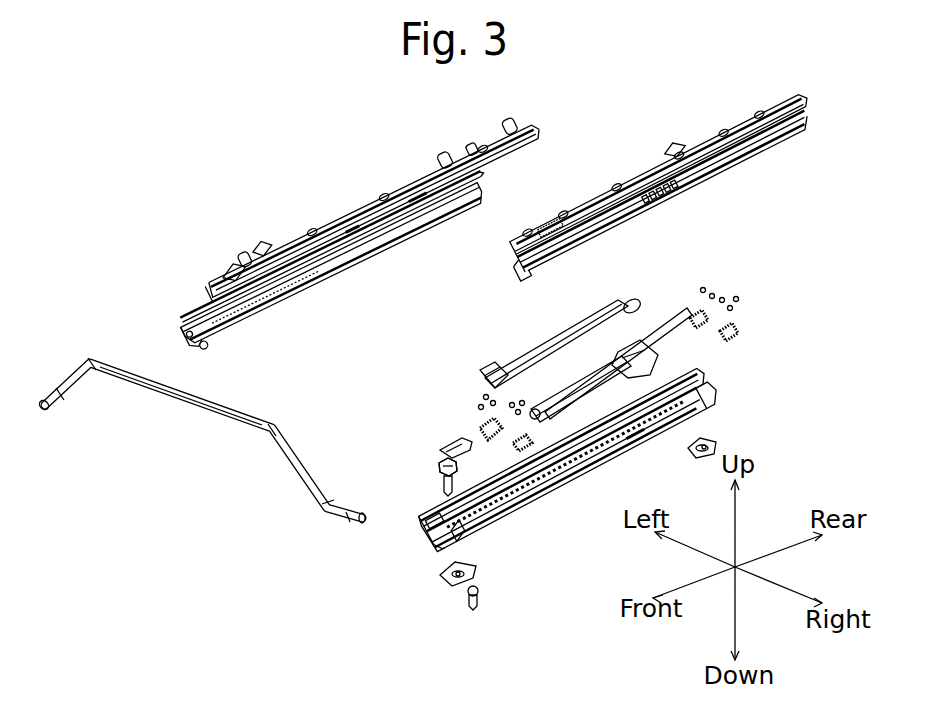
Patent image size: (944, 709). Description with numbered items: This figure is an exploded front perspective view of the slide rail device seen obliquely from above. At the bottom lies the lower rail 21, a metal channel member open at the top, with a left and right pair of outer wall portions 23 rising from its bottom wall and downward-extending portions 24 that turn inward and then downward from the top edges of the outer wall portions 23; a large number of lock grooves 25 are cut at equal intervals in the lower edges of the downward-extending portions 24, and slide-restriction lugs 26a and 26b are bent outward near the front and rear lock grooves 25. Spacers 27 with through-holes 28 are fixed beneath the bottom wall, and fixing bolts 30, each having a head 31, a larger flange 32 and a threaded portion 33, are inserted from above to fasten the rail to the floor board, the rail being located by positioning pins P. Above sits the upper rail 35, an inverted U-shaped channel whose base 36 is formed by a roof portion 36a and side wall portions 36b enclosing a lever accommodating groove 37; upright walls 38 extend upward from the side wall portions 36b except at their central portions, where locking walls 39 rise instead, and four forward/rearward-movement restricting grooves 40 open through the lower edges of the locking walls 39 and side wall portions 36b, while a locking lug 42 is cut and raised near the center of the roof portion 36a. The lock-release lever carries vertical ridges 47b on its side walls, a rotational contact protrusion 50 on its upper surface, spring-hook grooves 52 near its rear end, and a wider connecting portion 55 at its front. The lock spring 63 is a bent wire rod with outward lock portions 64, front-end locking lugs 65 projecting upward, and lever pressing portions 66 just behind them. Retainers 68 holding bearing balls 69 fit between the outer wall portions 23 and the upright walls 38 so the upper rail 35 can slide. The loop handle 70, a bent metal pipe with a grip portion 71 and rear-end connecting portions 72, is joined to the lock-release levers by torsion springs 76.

The lower rail 21 is at (303, 287).
The outer wall portions 23 is at (220, 283).
The downward-extending portions 24 is at (540, 487).
The lock grooves 25 is at (245, 300).
The slide-restriction lugs 26a is at (190, 298).
The slide-restriction lugs 26b is at (633, 437).
The spacers 27 is at (696, 460).
The through-holes 28 is at (700, 444).
The fixing bolts 30 is at (445, 461).
The head 31 is at (448, 467).
The flange 32 is at (440, 469).
The threaded portion 33 is at (447, 489).
The upper rail 35 is at (490, 142).
The base 36 is at (358, 210).
The roof portion 36a is at (658, 170).
The side wall portions 36b is at (724, 165).
The lever accommodating groove 37 is at (515, 275).
The upright walls 38 is at (758, 146).
The locking walls 39 is at (668, 188).
The forward/rearward-movement restricting grooves 40 is at (663, 199).
The locking lug 42 is at (432, 170).
The ridges 47b is at (547, 344).
The rotational contact protrusion 50 is at (578, 327).
The spring-hook grooves 52 is at (650, 314).
The connecting portion 55 is at (246, 266).
The lock spring 63 is at (667, 327).
The lock portions 64 is at (625, 359).
The front-end locking lugs 65 is at (533, 408).
The lever pressing portions 66 is at (557, 403).
The retainers 68 is at (483, 427).
The bearing balls 69 is at (490, 400).
The loop handle 70 is at (237, 426).
The grip portion 71 is at (200, 414).
The rear-end connecting portions 72 is at (73, 393).
The torsion springs 76 is at (442, 441).
The positioning pins P is at (478, 600).